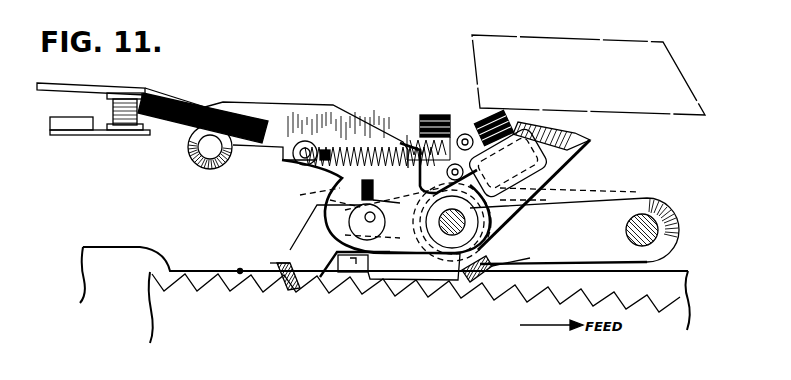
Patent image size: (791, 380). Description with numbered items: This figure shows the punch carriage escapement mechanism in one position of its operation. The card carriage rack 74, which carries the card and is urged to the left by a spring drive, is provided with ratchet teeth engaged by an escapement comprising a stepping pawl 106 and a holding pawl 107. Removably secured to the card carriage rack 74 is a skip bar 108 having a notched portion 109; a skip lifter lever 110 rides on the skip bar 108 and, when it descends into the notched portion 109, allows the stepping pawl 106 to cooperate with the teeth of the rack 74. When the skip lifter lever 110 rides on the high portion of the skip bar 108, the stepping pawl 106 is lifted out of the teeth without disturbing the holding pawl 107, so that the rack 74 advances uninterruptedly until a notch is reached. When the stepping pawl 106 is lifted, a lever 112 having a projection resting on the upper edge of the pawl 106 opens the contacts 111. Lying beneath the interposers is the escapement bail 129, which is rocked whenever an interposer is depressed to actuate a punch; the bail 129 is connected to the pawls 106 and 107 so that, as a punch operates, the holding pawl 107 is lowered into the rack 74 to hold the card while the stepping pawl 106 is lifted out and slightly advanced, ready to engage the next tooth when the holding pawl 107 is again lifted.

The card carriage rack 74 is at (170, 308).
The stepping pawl 106 is at (318, 252).
The holding pawl 107 is at (517, 290).
The skip bar 108 is at (120, 265).
The notched portion 109 is at (240, 272).
The skip lifter lever 110 is at (358, 265).
The contacts 111 is at (104, 107).
The lever 112 is at (266, 113).
The escapement bail 129 is at (587, 136).